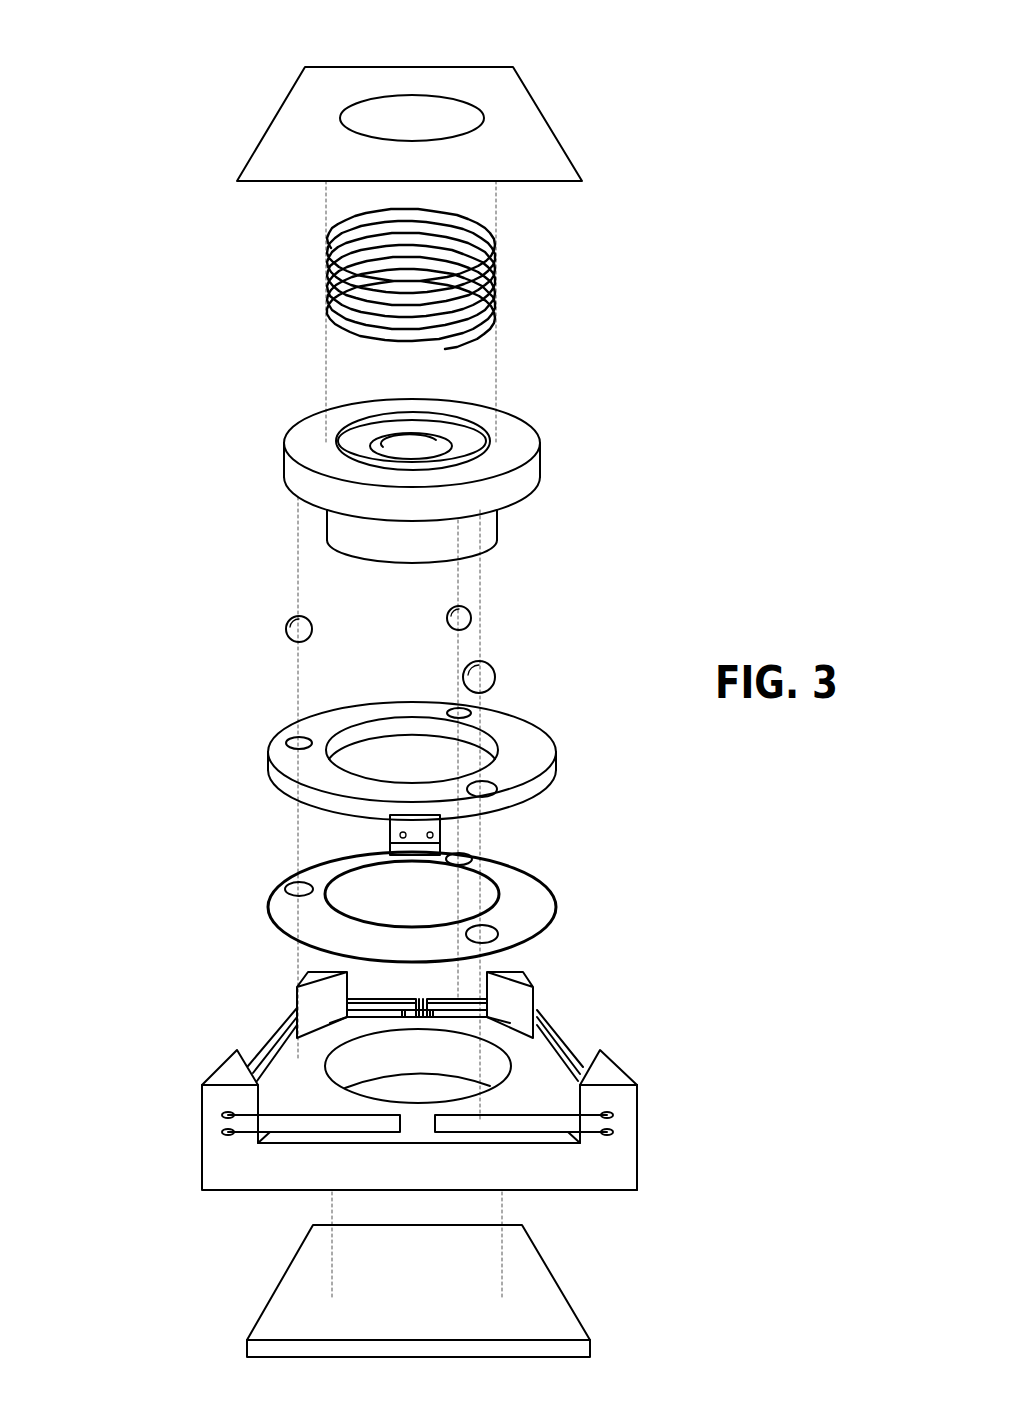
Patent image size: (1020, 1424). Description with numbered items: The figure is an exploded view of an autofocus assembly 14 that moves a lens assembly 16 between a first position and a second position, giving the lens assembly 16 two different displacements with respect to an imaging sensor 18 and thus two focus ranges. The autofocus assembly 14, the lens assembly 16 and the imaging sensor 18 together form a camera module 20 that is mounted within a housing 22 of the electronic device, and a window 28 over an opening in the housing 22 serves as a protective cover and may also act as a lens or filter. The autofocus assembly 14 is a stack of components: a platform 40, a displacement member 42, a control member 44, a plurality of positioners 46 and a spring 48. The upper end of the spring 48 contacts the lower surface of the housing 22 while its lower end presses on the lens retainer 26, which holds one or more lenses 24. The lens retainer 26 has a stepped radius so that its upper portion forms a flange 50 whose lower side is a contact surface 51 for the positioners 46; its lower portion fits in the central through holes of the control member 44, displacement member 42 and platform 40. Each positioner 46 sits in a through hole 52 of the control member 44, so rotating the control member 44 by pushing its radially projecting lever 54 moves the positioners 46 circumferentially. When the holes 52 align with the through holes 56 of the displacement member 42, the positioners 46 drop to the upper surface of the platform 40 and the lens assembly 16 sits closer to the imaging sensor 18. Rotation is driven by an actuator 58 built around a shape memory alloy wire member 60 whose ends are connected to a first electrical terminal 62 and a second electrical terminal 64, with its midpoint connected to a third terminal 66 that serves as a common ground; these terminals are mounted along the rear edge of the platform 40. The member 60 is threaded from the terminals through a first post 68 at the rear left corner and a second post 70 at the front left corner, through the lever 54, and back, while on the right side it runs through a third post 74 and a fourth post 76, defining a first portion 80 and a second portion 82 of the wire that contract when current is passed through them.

The autofocus assembly 14 is at (178, 222).
The camera module 20 is at (240, 220).
The housing 22 is at (439, 92).
The window 28 is at (412, 113).
The spring 48 is at (497, 298).
The lens assembly 16 is at (387, 468).
The lenses 24 is at (417, 447).
The flange 50 is at (295, 445).
The contact surface 51 is at (312, 500).
The lens retainer 26 is at (510, 492).
The positioners 46 is at (284, 630).
The control member 44 is at (415, 757).
The through holes 52 is at (470, 712).
The lever 54 is at (440, 835).
The displacement member 42 is at (417, 907).
The through holes 56 is at (295, 886).
The actuator 58 is at (160, 1050).
The third terminal 66 is at (423, 1003).
The first post 68 is at (305, 995).
The third post 74 is at (528, 995).
The first electrical terminal 62 is at (378, 1044).
The second electrical terminal 64 is at (460, 1044).
The member 60 is at (340, 1135).
The second post 70 is at (215, 1097).
The fourth post 76 is at (617, 1097).
The platform 40 is at (418, 1097).
The first portion 80 is at (270, 1133).
The second portion 82 is at (637, 1178).
The imaging sensor 18 is at (528, 1290).